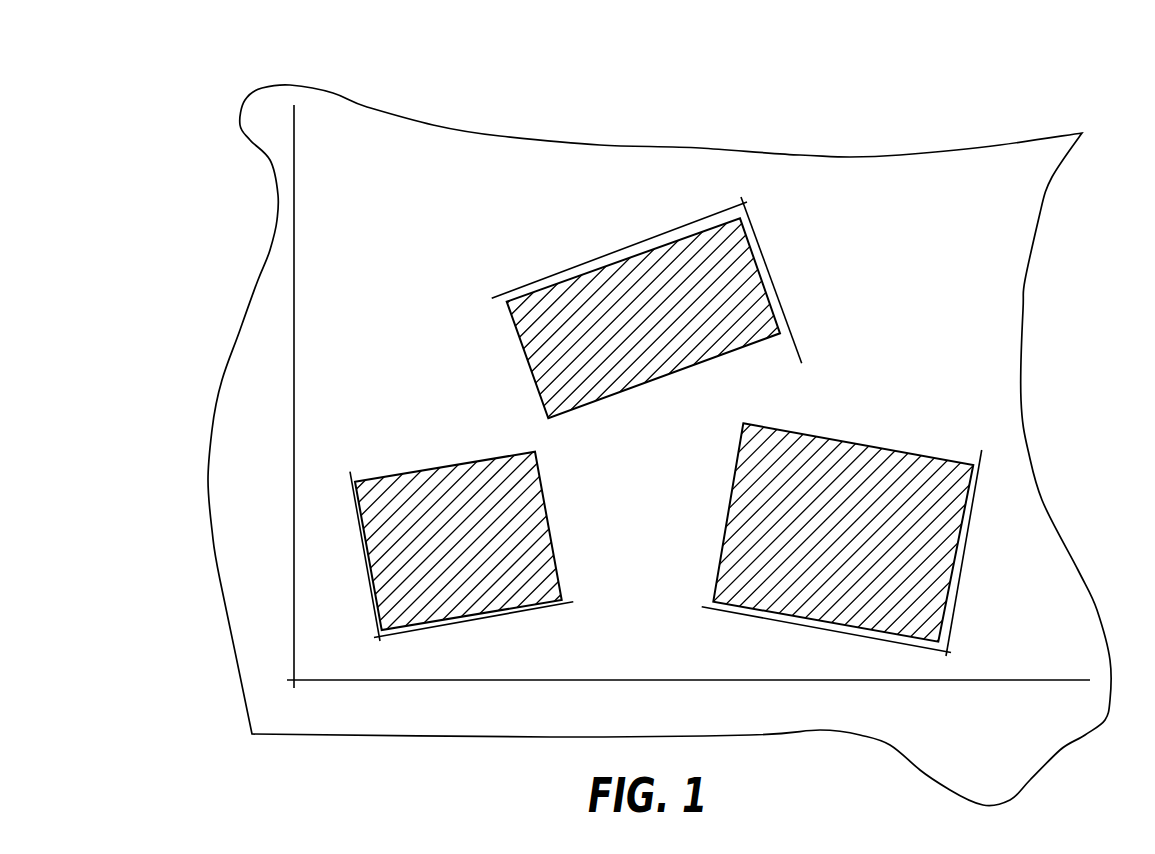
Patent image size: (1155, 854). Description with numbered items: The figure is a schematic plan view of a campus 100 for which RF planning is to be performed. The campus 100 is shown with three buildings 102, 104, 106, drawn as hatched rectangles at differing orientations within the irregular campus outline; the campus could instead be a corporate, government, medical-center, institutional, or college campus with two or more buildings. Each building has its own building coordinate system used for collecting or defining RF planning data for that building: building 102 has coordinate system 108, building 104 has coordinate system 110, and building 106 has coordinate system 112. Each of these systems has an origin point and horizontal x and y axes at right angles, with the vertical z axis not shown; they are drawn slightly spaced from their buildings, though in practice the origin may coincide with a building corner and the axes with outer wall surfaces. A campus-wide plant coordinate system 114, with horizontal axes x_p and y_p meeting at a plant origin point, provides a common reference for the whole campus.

The campus 100 is at (975, 124).
The building 102 is at (545, 490).
The building 104 is at (602, 398).
The building 106 is at (845, 442).
The coordinate system 108 is at (423, 633).
The coordinate system 110 is at (751, 222).
The coordinate system 112 is at (958, 588).
The plant coordinate system 114 is at (388, 682).